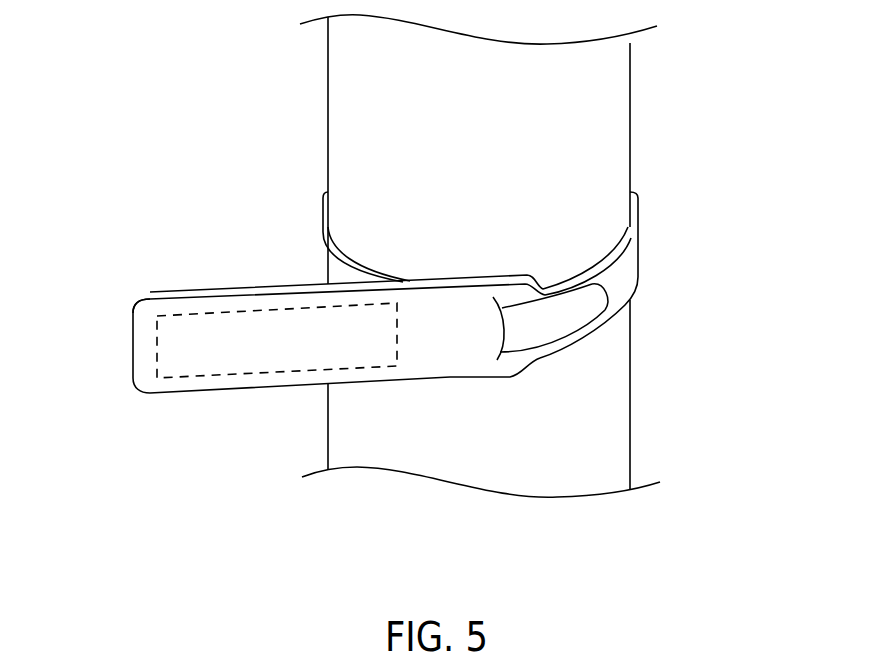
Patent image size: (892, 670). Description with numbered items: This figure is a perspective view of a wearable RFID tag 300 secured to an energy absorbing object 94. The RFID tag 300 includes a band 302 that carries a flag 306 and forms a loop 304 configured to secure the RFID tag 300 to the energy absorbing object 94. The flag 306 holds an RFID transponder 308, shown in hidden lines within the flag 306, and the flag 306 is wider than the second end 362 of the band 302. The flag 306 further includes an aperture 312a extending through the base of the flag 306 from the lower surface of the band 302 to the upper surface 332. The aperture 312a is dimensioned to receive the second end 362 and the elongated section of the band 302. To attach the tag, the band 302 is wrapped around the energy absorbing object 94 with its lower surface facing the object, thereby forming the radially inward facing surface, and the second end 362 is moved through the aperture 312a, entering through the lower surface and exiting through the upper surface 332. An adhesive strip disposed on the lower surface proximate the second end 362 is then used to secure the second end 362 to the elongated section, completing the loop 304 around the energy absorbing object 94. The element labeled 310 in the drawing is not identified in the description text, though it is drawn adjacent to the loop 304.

The energy absorbing object 94 is at (595, 117).
The RFID tag 300 is at (153, 397).
The band 302 is at (395, 283).
The loop 304 is at (620, 290).
The flag 306 is at (147, 318).
The RFID transponder 308 is at (255, 353).
The band 310 is at (618, 268).
The aperture 312a is at (497, 357).
The upper surface 332 is at (473, 357).
The second end 362 is at (580, 310).